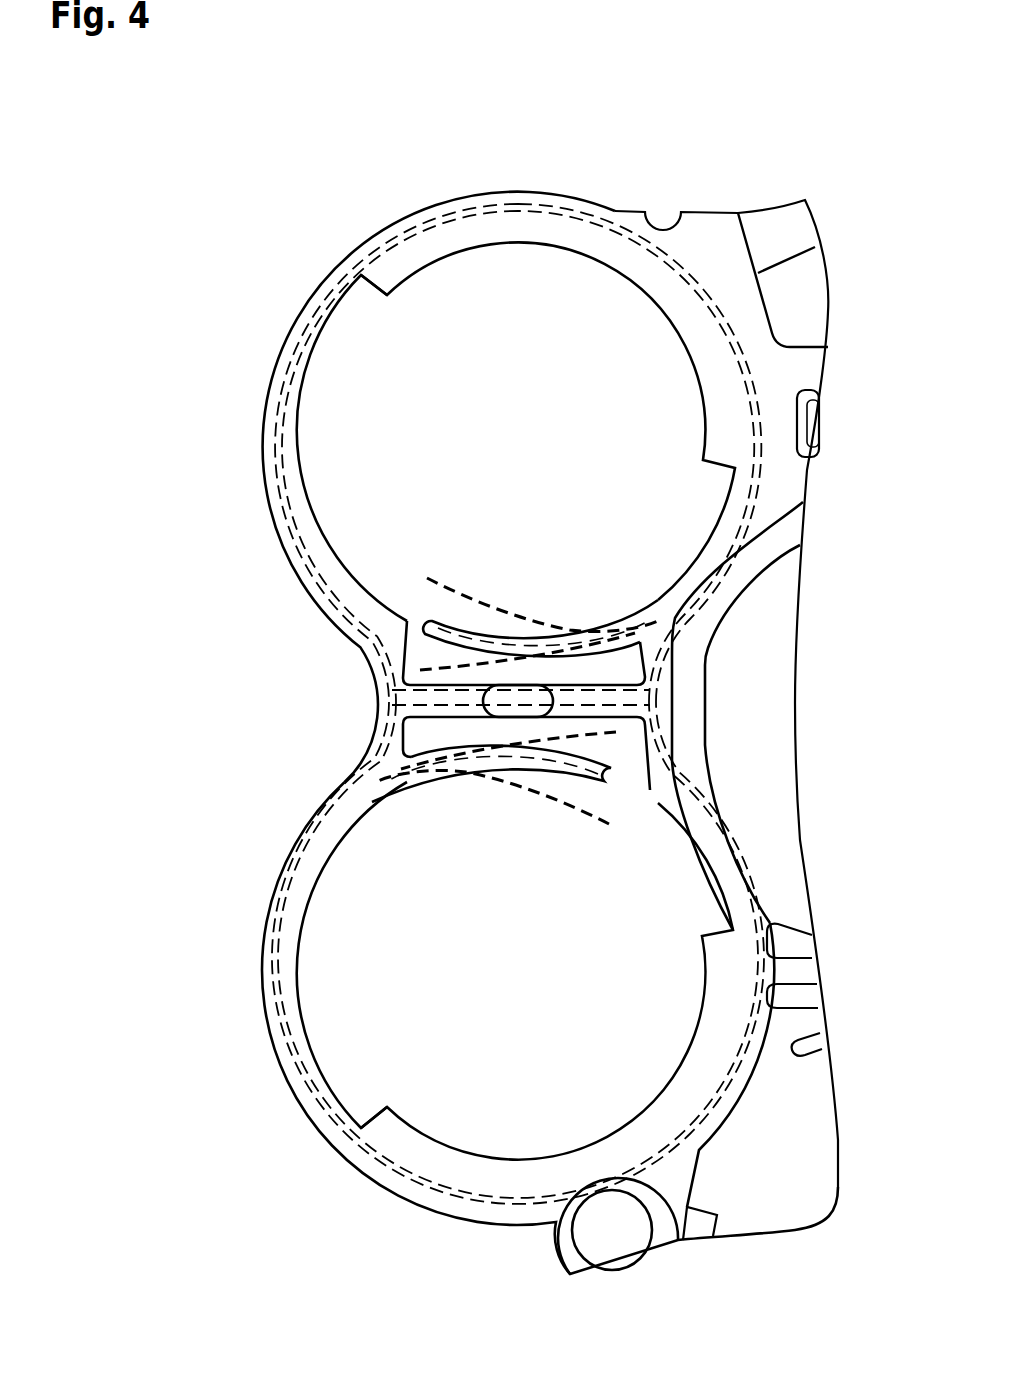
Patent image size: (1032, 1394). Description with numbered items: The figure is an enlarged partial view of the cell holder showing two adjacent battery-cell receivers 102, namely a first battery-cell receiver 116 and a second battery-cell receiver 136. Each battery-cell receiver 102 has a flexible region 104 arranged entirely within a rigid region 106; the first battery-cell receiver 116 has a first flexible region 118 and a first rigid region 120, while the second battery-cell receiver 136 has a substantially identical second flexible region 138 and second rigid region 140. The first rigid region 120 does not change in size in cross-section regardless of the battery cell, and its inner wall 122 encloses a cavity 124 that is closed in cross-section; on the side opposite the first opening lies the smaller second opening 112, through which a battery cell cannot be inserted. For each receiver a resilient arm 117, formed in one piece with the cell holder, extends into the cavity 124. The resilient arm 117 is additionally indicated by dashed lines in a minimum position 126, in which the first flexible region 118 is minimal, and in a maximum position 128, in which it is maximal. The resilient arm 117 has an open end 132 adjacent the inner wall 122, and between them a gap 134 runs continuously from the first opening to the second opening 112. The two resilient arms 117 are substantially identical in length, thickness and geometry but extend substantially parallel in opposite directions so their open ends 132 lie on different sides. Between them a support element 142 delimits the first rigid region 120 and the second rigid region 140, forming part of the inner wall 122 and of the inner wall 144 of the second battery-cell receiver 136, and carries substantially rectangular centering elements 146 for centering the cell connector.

The battery-cell receiver 102 is at (302, 202).
The first battery-cell receiver 116 is at (500, 654).
The second battery-cell receiver 136 is at (302, 1168).
The flexible region 104 is at (262, 432).
The first flexible region 118 is at (419, 453).
The second flexible region 138 is at (262, 940).
The rigid region 106 is at (290, 503).
The first rigid region 120 is at (416, 456).
The second rigid region 140 is at (400, 745).
The second opening 112 is at (514, 290).
The inner wall 122 is at (332, 428).
The cavity 124 is at (516, 364).
The minimum position 126 is at (427, 578).
The open end 132 is at (400, 620).
The gap 134 is at (425, 630).
The resilient arm 117 is at (432, 658).
The maximum position 128 is at (392, 690).
The centering element 146 is at (483, 700).
The support element 142 is at (623, 700).
The inner wall 144 is at (350, 1083).